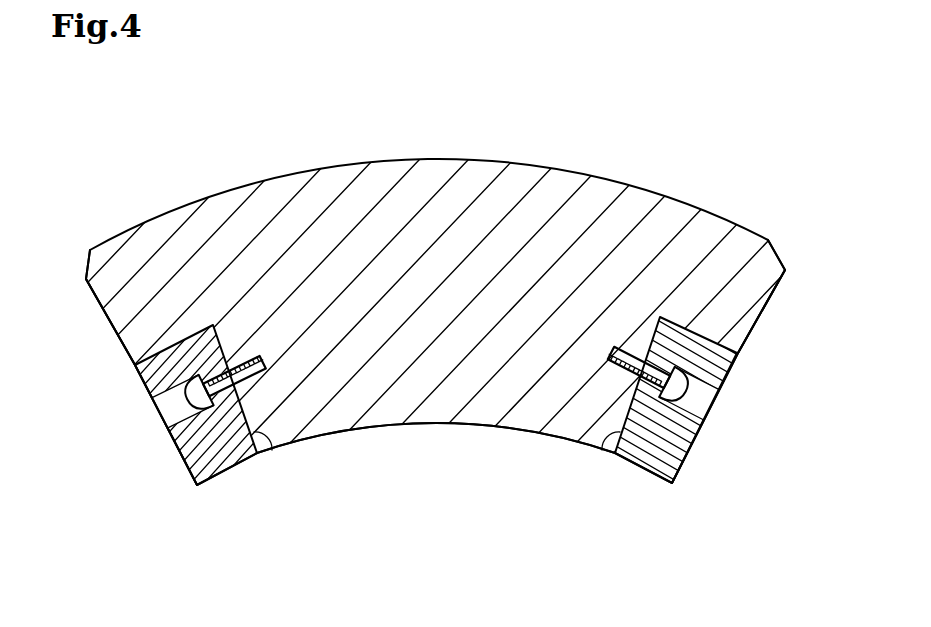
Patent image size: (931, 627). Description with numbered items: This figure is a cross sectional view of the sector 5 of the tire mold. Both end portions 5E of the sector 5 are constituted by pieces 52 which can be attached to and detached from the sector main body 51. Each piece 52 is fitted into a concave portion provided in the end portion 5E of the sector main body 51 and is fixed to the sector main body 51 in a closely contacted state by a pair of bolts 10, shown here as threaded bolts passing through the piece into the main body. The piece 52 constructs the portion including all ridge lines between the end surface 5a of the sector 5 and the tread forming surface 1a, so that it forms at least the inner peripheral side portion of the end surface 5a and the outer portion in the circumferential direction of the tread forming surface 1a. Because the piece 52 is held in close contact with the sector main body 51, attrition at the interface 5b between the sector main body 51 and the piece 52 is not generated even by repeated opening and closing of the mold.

The sector 5 is at (380, 509).
The end surface 5a is at (120, 342).
The interface 5b is at (272, 450).
The end portion 5E is at (159, 497).
The bolt 10 is at (168, 424).
The piece 52 is at (227, 473).
The tread forming surface 1a is at (417, 424).
The sector main body 51 is at (515, 422).